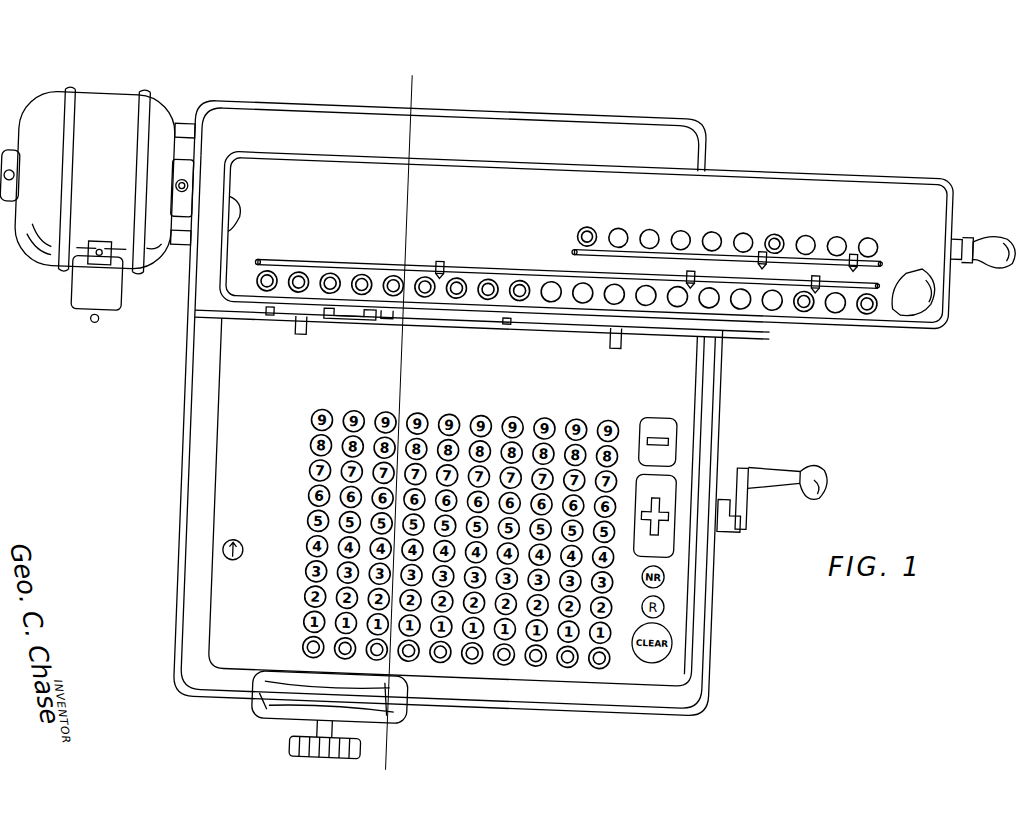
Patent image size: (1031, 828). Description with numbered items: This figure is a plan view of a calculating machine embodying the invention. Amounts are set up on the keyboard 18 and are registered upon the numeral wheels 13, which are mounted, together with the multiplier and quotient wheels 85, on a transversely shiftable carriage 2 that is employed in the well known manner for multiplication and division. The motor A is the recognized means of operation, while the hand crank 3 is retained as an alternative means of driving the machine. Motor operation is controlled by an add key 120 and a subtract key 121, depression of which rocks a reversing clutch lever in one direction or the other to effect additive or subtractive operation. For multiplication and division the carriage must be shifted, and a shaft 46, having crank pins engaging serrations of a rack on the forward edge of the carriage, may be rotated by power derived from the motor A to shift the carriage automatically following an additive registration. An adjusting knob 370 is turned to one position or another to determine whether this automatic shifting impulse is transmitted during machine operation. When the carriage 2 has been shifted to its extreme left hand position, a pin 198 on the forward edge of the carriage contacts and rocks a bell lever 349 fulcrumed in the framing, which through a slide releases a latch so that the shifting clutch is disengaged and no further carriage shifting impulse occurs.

The motor A is at (88, 114).
The carriage 2 is at (740, 155).
The multiplier and quotient wheels 85 is at (836, 235).
The numeral wheels 13 is at (832, 295).
The bell lever 349 is at (266, 322).
The pin 198 is at (505, 322).
The subtract key 121 is at (656, 412).
The add key 120 is at (682, 478).
The hand crank 3 is at (804, 458).
The adjusting knob 370 is at (249, 554).
The keyboard 18 is at (607, 656).
The shaft 46 is at (329, 739).